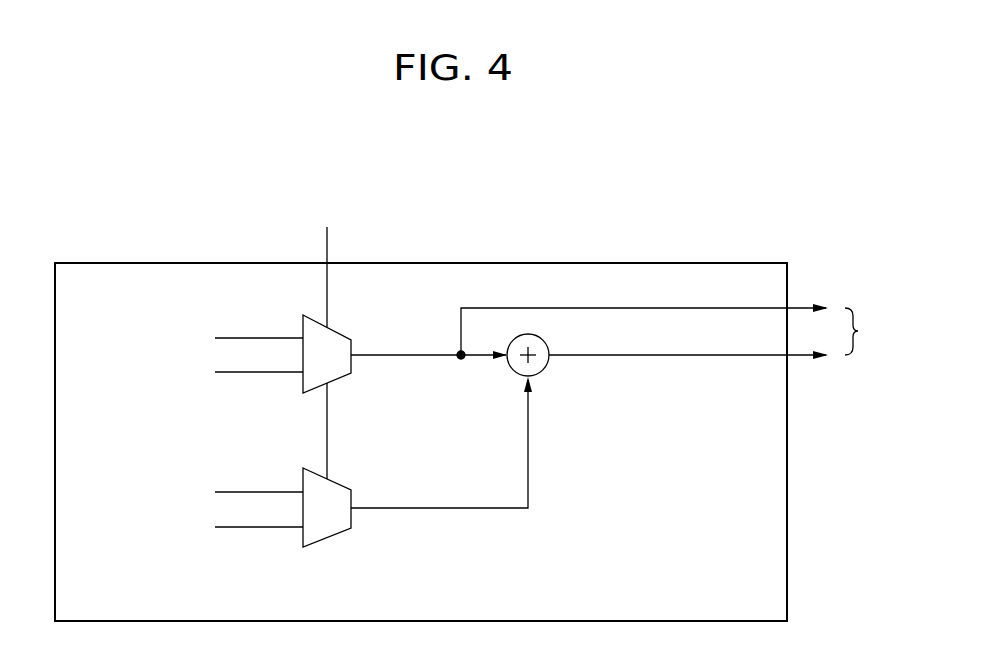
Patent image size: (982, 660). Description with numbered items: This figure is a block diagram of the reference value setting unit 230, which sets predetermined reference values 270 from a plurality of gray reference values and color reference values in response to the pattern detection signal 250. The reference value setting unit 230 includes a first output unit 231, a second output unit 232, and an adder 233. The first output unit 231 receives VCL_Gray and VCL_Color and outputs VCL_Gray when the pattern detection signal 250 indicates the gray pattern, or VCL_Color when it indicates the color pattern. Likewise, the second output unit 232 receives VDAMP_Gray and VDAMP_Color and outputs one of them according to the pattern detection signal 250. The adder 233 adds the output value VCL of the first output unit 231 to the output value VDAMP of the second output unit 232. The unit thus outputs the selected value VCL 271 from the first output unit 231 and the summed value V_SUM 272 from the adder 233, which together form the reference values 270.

The reference value setting unit 230 is at (600, 195).
The pattern detection signal 250 is at (508, 263).
The first output unit 231 is at (340, 332).
The second output unit 232 is at (340, 488).
The adder 233 is at (542, 370).
The reference values 270 is at (870, 331).
The output value VCL 271 is at (644, 319).
The output value V_SUM 272 is at (688, 345).